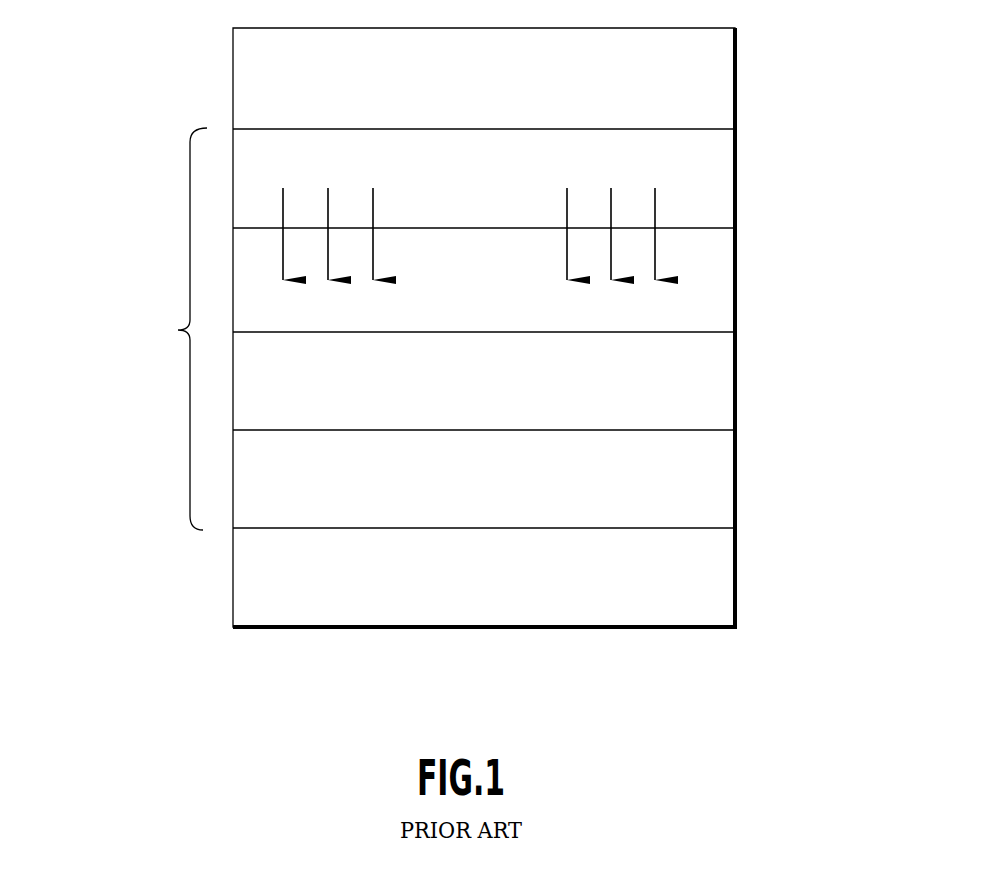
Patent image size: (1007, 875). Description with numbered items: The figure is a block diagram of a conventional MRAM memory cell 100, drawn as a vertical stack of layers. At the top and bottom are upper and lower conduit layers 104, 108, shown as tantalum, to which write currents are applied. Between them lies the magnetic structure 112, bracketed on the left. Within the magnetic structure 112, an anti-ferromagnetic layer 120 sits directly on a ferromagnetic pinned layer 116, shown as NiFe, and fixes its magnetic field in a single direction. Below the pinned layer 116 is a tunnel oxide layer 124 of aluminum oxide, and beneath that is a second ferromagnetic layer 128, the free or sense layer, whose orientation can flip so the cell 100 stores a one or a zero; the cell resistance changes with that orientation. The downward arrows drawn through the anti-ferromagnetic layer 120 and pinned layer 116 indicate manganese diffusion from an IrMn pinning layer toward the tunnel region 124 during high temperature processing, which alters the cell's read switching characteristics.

The MRAM memory cell 100 is at (139, 618).
The upper conduit layer 104 is at (754, 83).
The lower conduit layer 108 is at (754, 577).
The magnetic structure 112 is at (427, 329).
The ferromagnetic pinned layer 116 is at (754, 282).
The anti-ferromagnetic layer 120 is at (754, 175).
The tunnel oxide layer 124 is at (754, 375).
The second ferromagnetic layer 128 is at (754, 477).